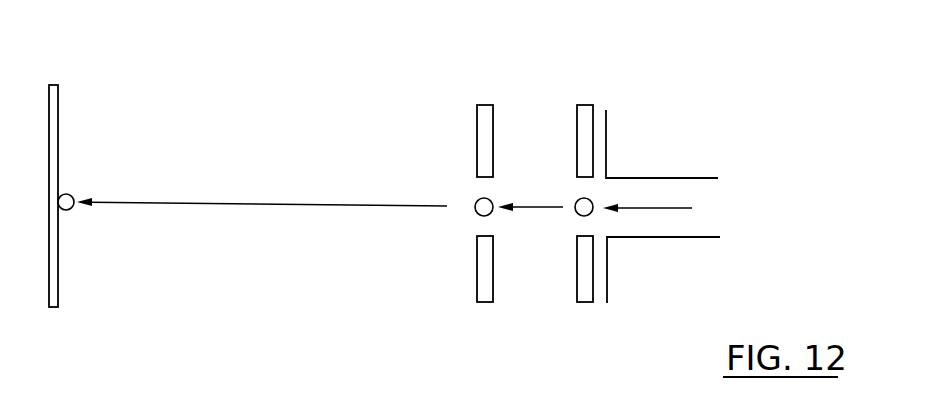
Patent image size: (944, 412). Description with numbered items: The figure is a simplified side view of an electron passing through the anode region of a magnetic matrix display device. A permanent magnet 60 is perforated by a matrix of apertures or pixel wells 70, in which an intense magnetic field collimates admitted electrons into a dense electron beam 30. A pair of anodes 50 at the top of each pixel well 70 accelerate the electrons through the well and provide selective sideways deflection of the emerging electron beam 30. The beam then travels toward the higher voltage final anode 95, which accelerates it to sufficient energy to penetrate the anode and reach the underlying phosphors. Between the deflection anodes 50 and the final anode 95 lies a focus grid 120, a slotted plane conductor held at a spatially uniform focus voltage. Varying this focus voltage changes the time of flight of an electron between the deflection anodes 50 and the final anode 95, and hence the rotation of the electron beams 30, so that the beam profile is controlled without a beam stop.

The final anode 95 is at (59, 131).
The electron beam 30 is at (263, 202).
The focus grid 120 is at (477, 292).
The anodes 50 is at (577, 290).
The pixel wells 70 is at (650, 187).
The permanent magnet 60 is at (640, 275).